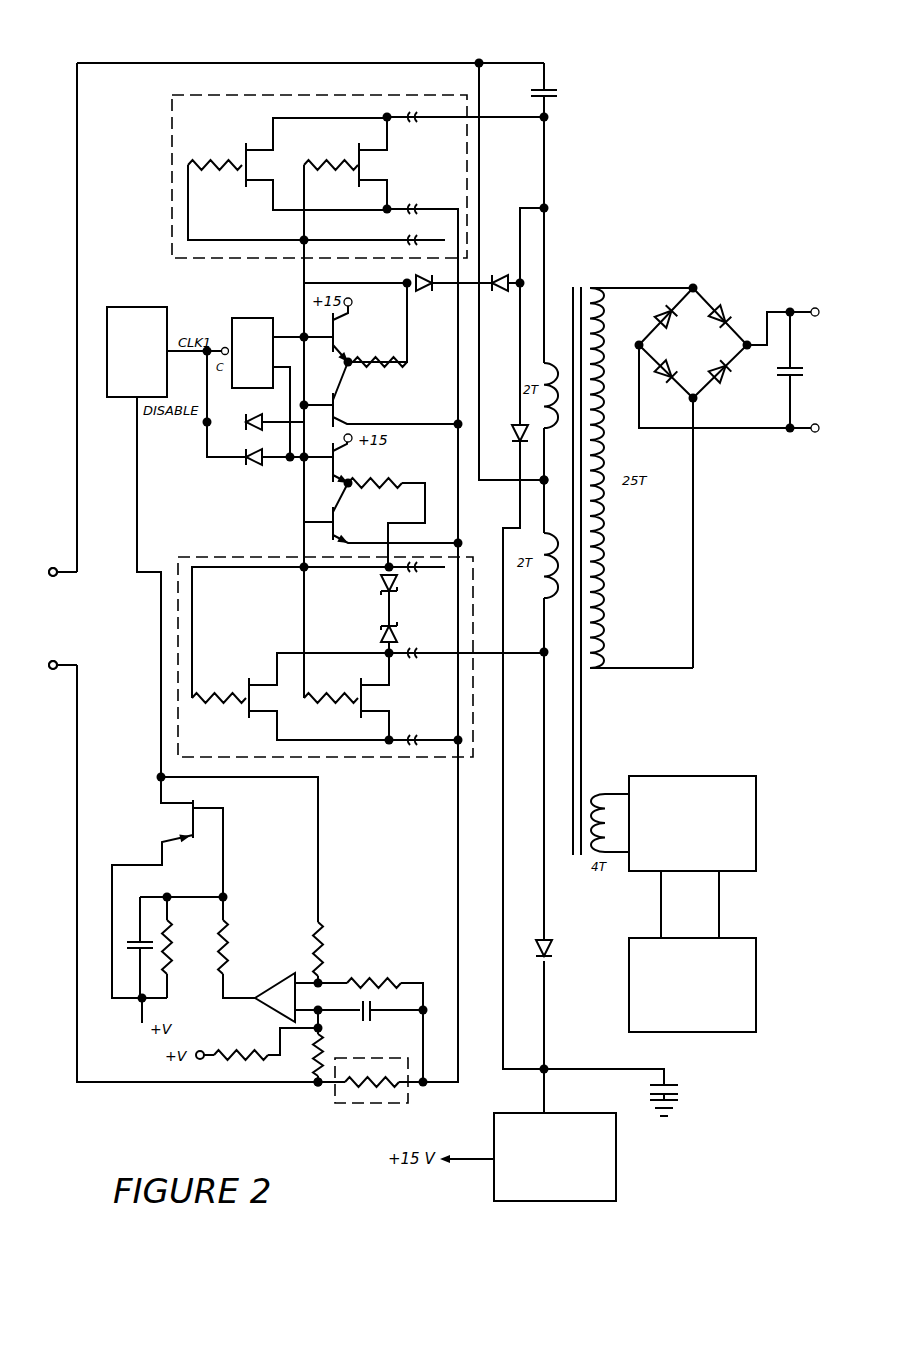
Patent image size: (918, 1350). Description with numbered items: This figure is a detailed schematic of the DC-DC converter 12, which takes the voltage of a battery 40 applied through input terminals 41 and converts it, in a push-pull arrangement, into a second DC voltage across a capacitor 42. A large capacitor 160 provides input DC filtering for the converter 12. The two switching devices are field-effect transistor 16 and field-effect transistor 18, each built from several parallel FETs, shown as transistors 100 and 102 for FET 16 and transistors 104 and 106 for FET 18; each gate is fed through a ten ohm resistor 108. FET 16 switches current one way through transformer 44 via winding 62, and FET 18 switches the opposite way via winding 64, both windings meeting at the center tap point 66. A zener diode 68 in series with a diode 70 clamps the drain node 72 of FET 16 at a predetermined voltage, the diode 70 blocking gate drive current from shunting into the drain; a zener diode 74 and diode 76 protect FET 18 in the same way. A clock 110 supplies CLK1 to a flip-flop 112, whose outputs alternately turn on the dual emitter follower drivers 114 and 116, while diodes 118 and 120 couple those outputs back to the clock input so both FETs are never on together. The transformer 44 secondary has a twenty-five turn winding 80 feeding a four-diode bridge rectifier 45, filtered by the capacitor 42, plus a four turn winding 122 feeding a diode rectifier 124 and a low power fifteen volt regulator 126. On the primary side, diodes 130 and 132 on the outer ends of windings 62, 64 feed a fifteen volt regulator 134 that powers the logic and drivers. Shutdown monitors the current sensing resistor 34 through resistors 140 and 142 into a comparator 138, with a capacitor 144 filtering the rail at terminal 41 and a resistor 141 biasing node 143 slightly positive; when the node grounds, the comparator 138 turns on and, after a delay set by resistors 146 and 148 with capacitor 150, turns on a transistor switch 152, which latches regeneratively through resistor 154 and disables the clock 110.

The DC-DC converter 12 is at (343, 48).
The field-effect transistor 16 is at (216, 126).
The field-effect transistor 18 is at (269, 752).
The current sensing resistor 34 is at (362, 1104).
The battery 40 is at (82, 618).
The input terminals 41 is at (53, 567).
The capacitor 42 is at (783, 378).
The transformer 44 is at (577, 283).
The bridge rectifier 45 is at (729, 280).
The winding 62 is at (552, 362).
The winding 64 is at (547, 598).
The center tap point 66 is at (544, 482).
The zener diode 68 is at (440, 290).
The diode 70 is at (500, 294).
The node 72 is at (542, 204).
The zener diode 74 is at (378, 582).
The diode 76 is at (378, 633).
The 25 turn winding 80 is at (598, 289).
The field-effect transistor 100 is at (250, 172).
The field-effect transistor 102 is at (365, 158).
The field-effect transistor 104 is at (249, 710).
The field-effect transistor 106 is at (365, 700).
The resistor 108 is at (222, 173).
The clock 110 is at (143, 306).
The flip-flop 112 is at (243, 316).
The field-effect transistor driver 114 is at (328, 320).
The field-effect transistor driver 116 is at (342, 466).
The diode 118 is at (240, 427).
The diode 120 is at (240, 465).
The four turn winding 122 is at (599, 792).
The diode rectifier 124 is at (688, 776).
The low power 15 volt regulator 126 is at (722, 1032).
The diode 130 is at (513, 419).
The diode 132 is at (553, 950).
The 15 volt regulator 134 is at (616, 1178).
The comparator 138 is at (268, 986).
The resistor 140 is at (316, 1058).
The resistor 141 is at (240, 1050).
The resistor 142 is at (372, 977).
The node 143 is at (321, 1015).
The capacitor 144 is at (367, 1022).
The resistor 146 is at (232, 946).
The resistor 148 is at (171, 950).
The capacitor 150 is at (136, 940).
The transistor switch 152 is at (196, 806).
The resistor 154 is at (314, 932).
The capacitor 160 is at (550, 86).